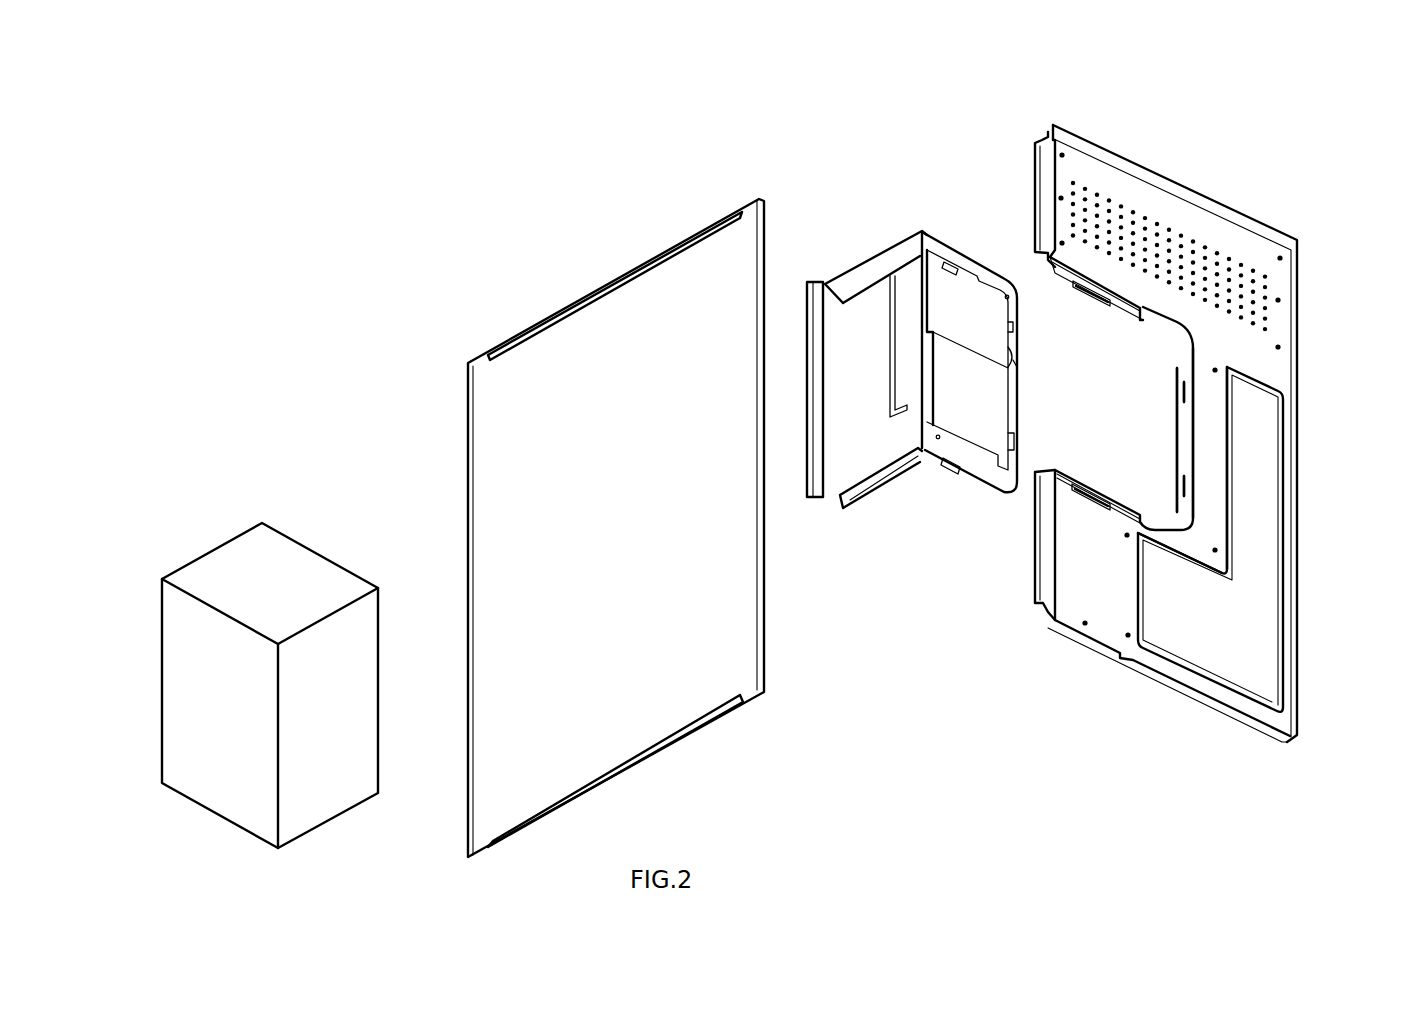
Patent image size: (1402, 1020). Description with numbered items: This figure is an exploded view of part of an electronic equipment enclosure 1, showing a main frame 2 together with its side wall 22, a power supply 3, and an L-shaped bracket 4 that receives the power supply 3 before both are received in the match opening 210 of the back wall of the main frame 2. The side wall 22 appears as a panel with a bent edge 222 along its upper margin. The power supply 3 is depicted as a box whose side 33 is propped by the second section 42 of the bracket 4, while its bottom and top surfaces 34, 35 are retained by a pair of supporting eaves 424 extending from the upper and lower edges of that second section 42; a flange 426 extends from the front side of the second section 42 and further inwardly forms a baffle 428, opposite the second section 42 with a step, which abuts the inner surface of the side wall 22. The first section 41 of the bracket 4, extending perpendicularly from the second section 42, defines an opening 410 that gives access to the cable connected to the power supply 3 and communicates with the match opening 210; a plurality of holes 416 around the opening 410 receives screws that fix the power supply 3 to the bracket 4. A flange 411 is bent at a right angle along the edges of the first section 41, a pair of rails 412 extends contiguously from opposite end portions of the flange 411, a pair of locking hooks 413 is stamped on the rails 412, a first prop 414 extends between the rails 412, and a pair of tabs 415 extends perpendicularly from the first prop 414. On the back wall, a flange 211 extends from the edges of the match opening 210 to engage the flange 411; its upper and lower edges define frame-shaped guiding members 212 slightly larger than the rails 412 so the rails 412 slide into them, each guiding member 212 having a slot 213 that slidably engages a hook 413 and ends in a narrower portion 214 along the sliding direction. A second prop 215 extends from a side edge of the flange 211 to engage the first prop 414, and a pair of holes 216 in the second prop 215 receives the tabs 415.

The electronic equipment enclosure 1 is at (939, 759).
The main frame 2 is at (953, 23).
The side wall 22 is at (623, 273).
The flange of side panel 222 is at (757, 195).
The power supply 3 is at (396, 697).
The side of the power supply 33 is at (162, 695).
The bottom surface of the power supply 34 is at (303, 568).
The top surface of the power supply 35 is at (350, 812).
The bracket 4 is at (870, 517).
The first section 41 is at (952, 243).
The opening 410 is at (975, 358).
The flange 411 is at (1018, 297).
The rails 412 is at (928, 228).
The locking hooks 413 is at (953, 265).
The first prop 414 is at (1013, 338).
The tabs 415 is at (1017, 367).
The holes 416 is at (1020, 327).
The second section 42 is at (840, 262).
The supporting eaves 424 is at (843, 303).
The flange 426 is at (818, 350).
The baffle 428 is at (812, 392).
The match opening 210 is at (1227, 550).
The flange 211 is at (1183, 395).
The guiding member 212 is at (1063, 277).
The slot 213 is at (1087, 292).
The narrower portion 214 is at (1105, 305).
The second prop 215 is at (1178, 463).
The holes 216 is at (1178, 433).